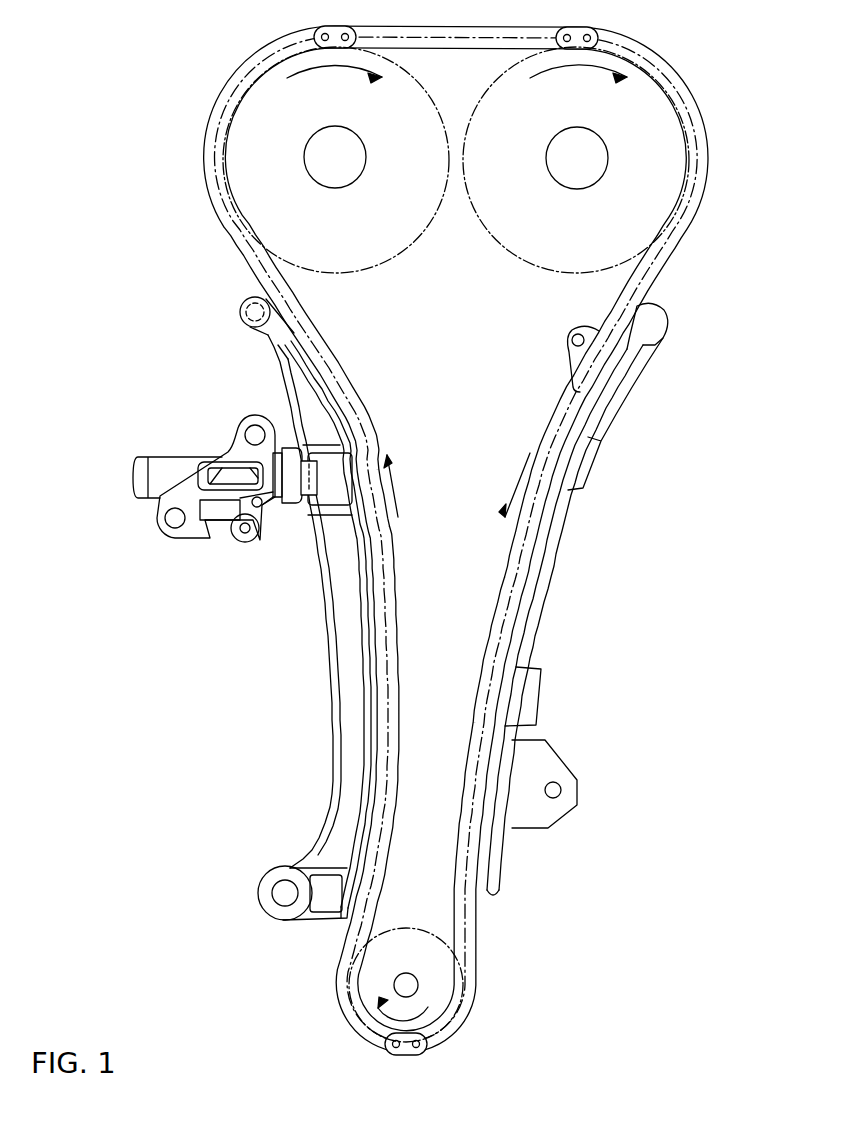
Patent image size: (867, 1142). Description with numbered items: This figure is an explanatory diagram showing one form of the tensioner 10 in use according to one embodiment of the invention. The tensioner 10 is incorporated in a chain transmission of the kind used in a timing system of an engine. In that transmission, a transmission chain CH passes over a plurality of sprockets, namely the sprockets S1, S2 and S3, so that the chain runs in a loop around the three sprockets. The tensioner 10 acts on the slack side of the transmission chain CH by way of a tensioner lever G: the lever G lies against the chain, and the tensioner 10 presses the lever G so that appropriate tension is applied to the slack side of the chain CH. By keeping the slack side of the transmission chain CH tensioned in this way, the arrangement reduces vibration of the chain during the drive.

The tensioner 10 is at (213, 462).
The sprocket S1 is at (435, 985).
The sprocket S2 is at (255, 150).
The sprocket S3 is at (640, 143).
The transmission chain CH is at (645, 274).
The tensioner lever G is at (347, 790).